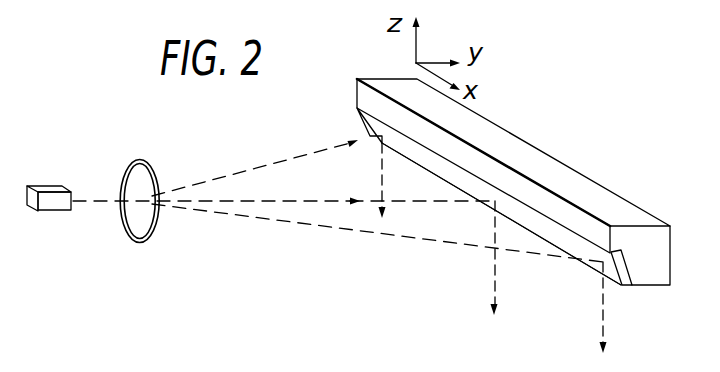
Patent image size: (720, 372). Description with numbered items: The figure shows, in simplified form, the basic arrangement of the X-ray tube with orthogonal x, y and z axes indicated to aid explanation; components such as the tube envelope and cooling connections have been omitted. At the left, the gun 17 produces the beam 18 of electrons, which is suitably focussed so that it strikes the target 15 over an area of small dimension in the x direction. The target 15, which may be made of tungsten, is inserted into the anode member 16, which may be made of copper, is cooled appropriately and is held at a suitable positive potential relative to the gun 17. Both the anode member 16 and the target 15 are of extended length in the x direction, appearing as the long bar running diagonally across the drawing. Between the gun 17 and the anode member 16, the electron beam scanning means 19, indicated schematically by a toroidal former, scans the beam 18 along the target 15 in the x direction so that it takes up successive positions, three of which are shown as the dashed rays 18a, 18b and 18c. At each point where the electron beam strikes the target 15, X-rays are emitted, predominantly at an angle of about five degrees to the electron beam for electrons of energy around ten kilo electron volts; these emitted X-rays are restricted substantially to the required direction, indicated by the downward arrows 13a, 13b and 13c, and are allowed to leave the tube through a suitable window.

The X-rays 13a is at (398, 180).
The X-rays 13b is at (512, 258).
The X-rays 13c is at (619, 307).
The target 15 is at (563, 235).
The anode member 16 is at (563, 161).
The gun 17 is at (49, 185).
The beam of electrons 18 is at (100, 201).
The electron beam position 18a is at (280, 160).
The electron beam position 18b is at (273, 200).
The electron beam position 18c is at (313, 226).
The electron beam scanning means 19 is at (148, 160).